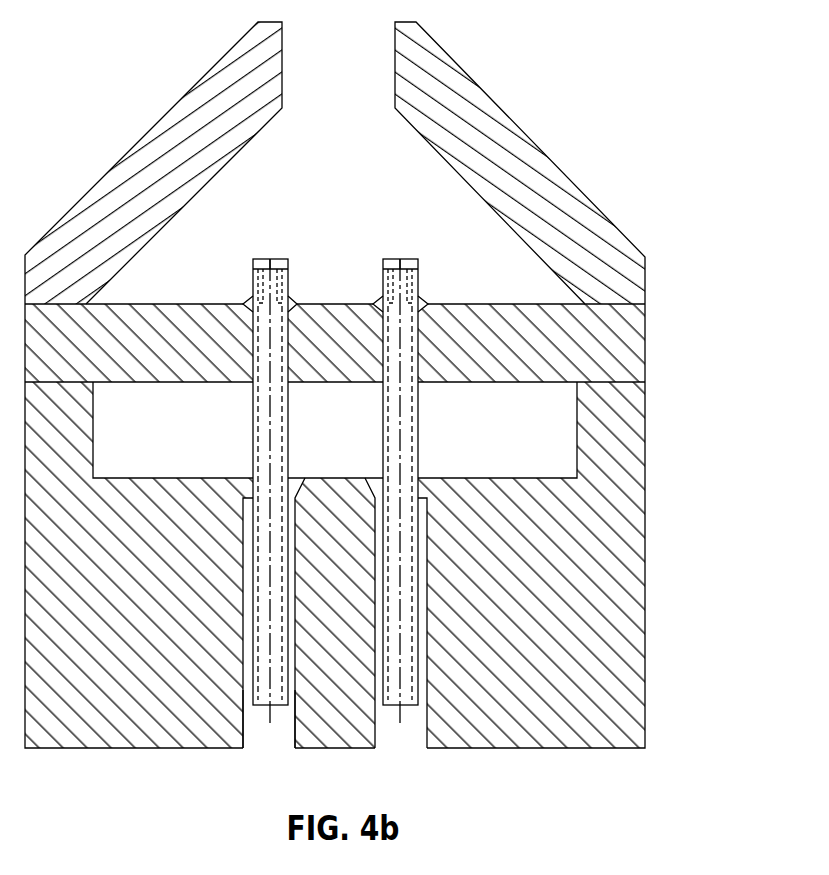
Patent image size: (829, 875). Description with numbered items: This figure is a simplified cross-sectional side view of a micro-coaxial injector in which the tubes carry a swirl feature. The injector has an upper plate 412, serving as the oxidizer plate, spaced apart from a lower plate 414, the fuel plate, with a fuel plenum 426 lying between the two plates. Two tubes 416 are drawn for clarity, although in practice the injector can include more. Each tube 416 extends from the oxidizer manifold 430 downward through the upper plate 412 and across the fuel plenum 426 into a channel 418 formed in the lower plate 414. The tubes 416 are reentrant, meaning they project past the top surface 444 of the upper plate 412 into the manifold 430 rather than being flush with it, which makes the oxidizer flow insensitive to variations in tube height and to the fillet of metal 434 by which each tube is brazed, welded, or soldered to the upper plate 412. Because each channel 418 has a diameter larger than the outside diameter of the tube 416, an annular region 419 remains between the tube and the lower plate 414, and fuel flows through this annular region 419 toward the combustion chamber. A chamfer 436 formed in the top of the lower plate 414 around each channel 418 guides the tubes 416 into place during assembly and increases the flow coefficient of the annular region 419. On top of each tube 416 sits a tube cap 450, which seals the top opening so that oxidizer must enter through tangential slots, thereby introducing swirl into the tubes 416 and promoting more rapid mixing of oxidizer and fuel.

The upper plate 412 is at (374, 314).
The lower plate 414 is at (374, 590).
The tube 416 is at (324, 461).
The channel 418 is at (243, 552).
The annular region 419 is at (247, 697).
The fuel plenum 426 is at (474, 443).
The oxidizer manifold 430 is at (316, 117).
The fillet of metal 434 is at (247, 302).
The chamfer 436 is at (294, 480).
The top surface 444 is at (458, 304).
The tube cap 450 is at (261, 265).